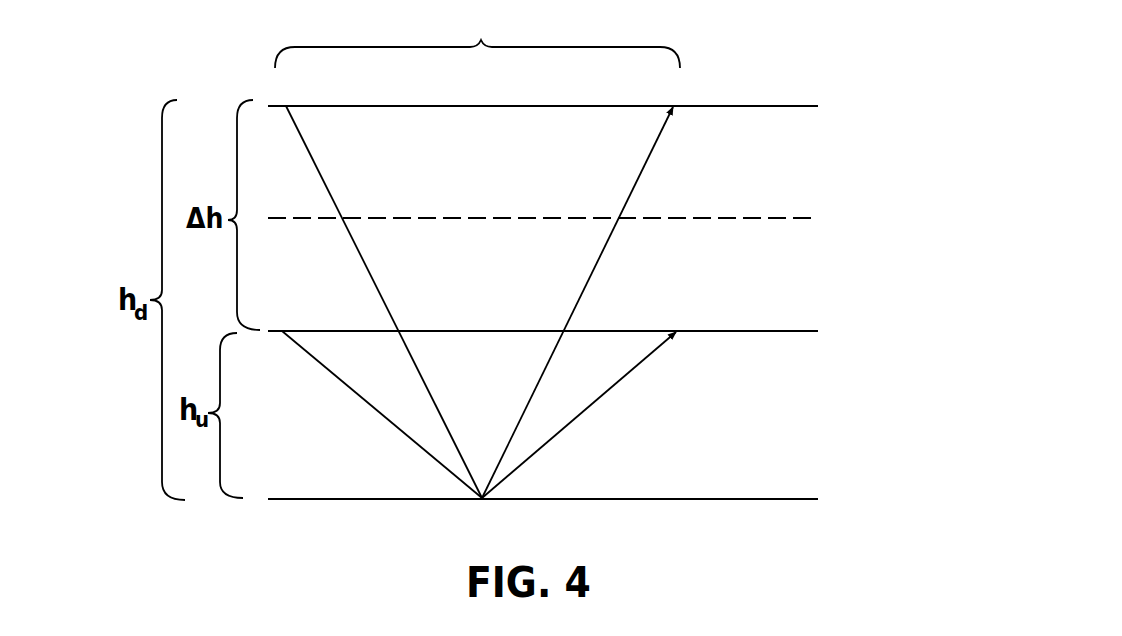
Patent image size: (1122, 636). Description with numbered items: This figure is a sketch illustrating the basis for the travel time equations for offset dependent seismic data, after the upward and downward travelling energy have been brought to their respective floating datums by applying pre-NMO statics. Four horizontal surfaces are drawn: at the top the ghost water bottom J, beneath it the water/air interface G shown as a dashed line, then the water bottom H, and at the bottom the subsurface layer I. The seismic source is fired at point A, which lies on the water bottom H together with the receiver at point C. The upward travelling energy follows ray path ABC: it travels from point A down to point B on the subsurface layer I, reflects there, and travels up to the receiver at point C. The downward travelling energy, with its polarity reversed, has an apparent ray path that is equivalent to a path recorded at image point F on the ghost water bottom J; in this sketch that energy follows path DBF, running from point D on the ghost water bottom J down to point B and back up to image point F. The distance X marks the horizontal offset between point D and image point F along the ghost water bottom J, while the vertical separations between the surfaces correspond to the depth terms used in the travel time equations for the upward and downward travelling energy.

The ghost water bottom J is at (803, 88).
The water/air interface G is at (802, 207).
The water bottom H is at (802, 313).
The subsurface layer I is at (807, 485).
The point D is at (380, 282).
The image point F is at (586, 283).
The point A is at (378, 396).
The point C is at (587, 396).
The point B is at (487, 517).
The horizontal distance X is at (477, 35).